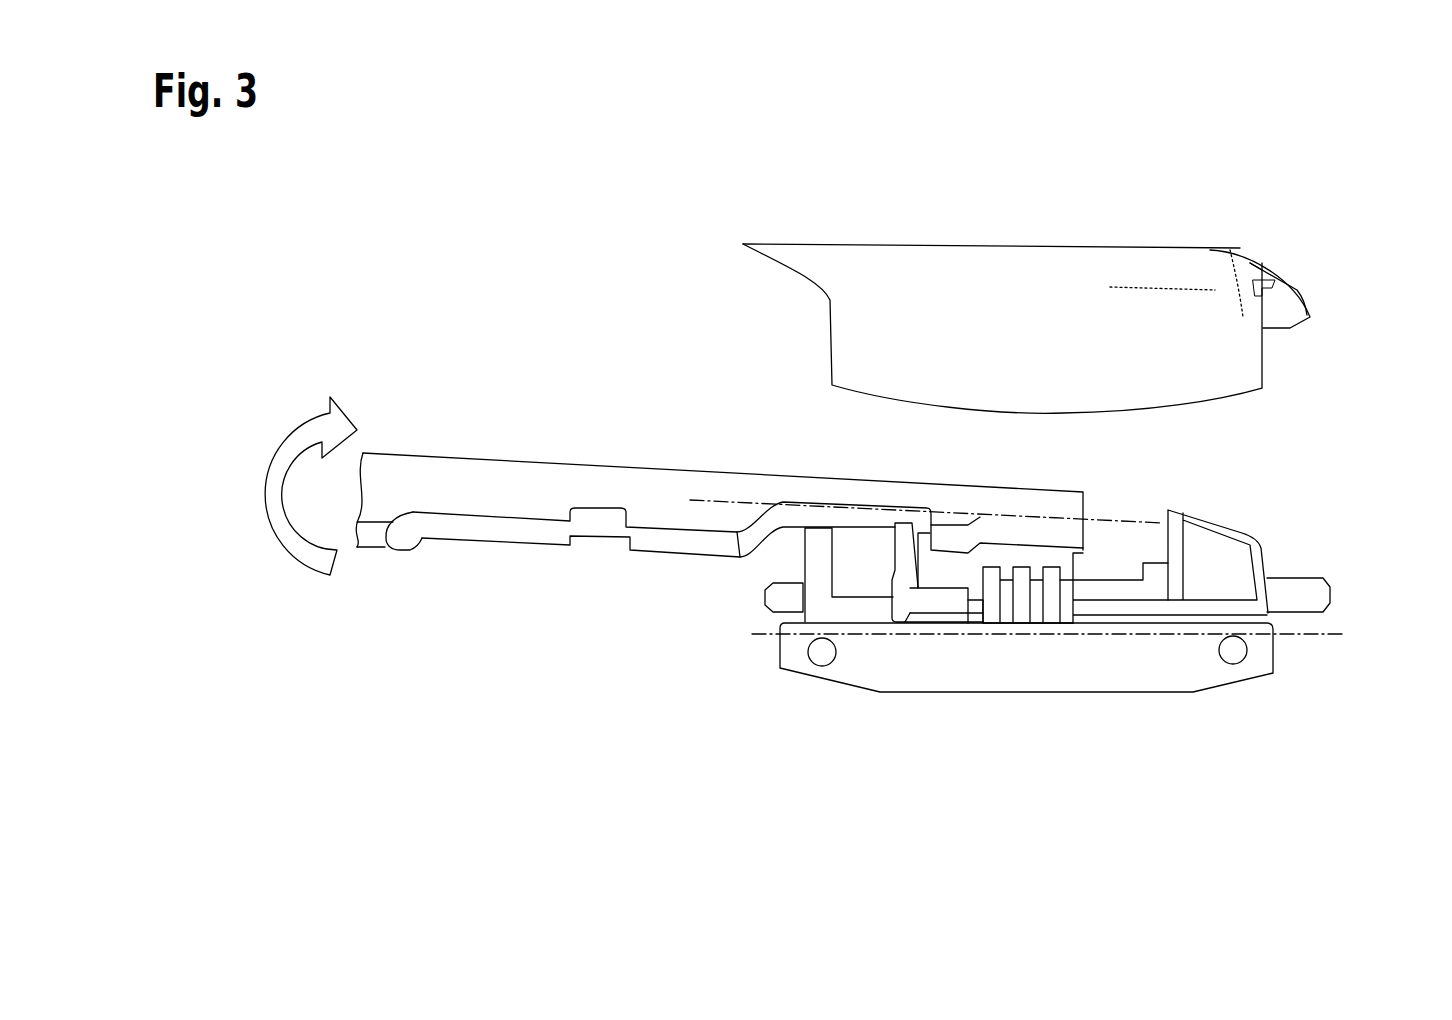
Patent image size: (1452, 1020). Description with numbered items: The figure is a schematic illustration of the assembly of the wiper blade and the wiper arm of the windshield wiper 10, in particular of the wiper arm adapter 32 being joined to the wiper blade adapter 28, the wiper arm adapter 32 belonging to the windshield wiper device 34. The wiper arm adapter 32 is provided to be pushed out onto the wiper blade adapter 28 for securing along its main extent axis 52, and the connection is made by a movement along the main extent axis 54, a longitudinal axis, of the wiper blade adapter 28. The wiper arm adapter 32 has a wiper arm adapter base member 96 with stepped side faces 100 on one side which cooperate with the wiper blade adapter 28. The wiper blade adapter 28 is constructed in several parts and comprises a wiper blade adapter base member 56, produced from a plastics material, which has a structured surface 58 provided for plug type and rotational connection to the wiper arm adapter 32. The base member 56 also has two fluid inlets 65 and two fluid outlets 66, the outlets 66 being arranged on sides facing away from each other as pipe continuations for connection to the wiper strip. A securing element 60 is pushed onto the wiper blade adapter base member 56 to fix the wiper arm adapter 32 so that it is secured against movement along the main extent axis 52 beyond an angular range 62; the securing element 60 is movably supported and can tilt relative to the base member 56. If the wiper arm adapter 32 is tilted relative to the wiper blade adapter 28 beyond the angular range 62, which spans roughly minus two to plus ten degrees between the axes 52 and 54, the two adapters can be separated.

The windshield wiper 10 is at (1349, 208).
The wiper blade adapter 28 is at (998, 716).
The wiper arm adapter 32 is at (545, 302).
The windshield wiper device 34 is at (595, 332).
The main extent axis of the wiper arm adapter 52 is at (704, 500).
The main extent axis of the wiper blade adapter 54 is at (1327, 636).
The wiper blade adapter base member 56 is at (1123, 678).
The structured surface 58 is at (977, 583).
The securing element 60 is at (1053, 285).
The angular range 62 is at (275, 497).
The fluid inlets 65 is at (822, 660).
The fluid outlets 66 is at (777, 600).
The wiper arm adapter base member 96 is at (618, 487).
The stepped side faces 100 is at (652, 546).